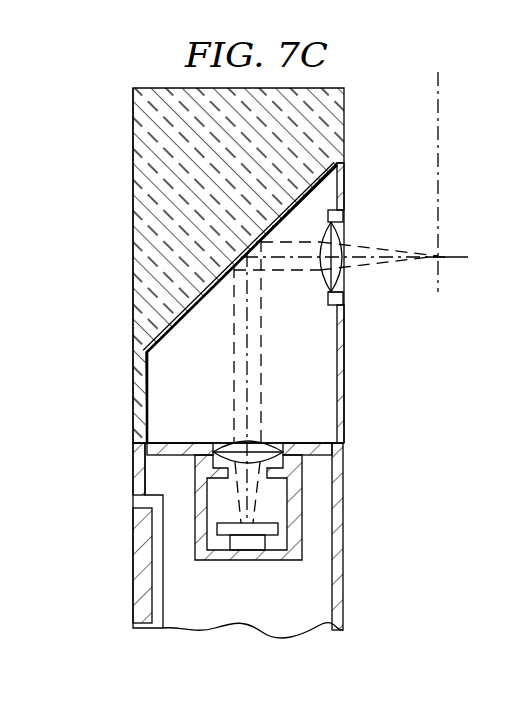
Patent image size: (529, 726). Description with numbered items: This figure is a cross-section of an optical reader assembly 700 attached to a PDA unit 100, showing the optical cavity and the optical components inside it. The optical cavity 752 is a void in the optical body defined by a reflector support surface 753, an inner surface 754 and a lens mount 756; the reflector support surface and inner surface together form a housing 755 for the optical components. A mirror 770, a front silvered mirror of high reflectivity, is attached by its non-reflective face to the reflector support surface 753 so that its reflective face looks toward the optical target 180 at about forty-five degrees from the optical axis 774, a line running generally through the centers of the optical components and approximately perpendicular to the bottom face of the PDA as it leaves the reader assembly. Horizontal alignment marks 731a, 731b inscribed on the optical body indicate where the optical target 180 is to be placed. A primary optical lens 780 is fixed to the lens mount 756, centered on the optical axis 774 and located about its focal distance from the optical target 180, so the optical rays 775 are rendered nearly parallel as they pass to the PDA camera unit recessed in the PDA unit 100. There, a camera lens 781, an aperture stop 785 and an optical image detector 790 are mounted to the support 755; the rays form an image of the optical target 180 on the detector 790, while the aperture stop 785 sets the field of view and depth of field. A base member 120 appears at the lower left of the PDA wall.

The PDA unit 100 is at (353, 532).
The base member 120 is at (133, 580).
The optical target 180 is at (437, 132).
The optical reader assembly 700 is at (128, 270).
The horizontal alignment mark 731a is at (344, 211).
The horizontal alignment mark 731b is at (344, 305).
The optical cavity 752 is at (323, 388).
The reflector support surface 753 is at (145, 343).
The inner surface 754 is at (148, 418).
The housing 755 is at (236, 560).
The lens mount 756 is at (345, 284).
The mirror 770 is at (145, 374).
The optical axis 774 is at (455, 257).
The optical rays 775 is at (262, 378).
The primary optical lens 780 is at (340, 238).
The camera lens 781 is at (222, 443).
The aperture stop 785 is at (283, 493).
The optical image detector 790 is at (277, 537).